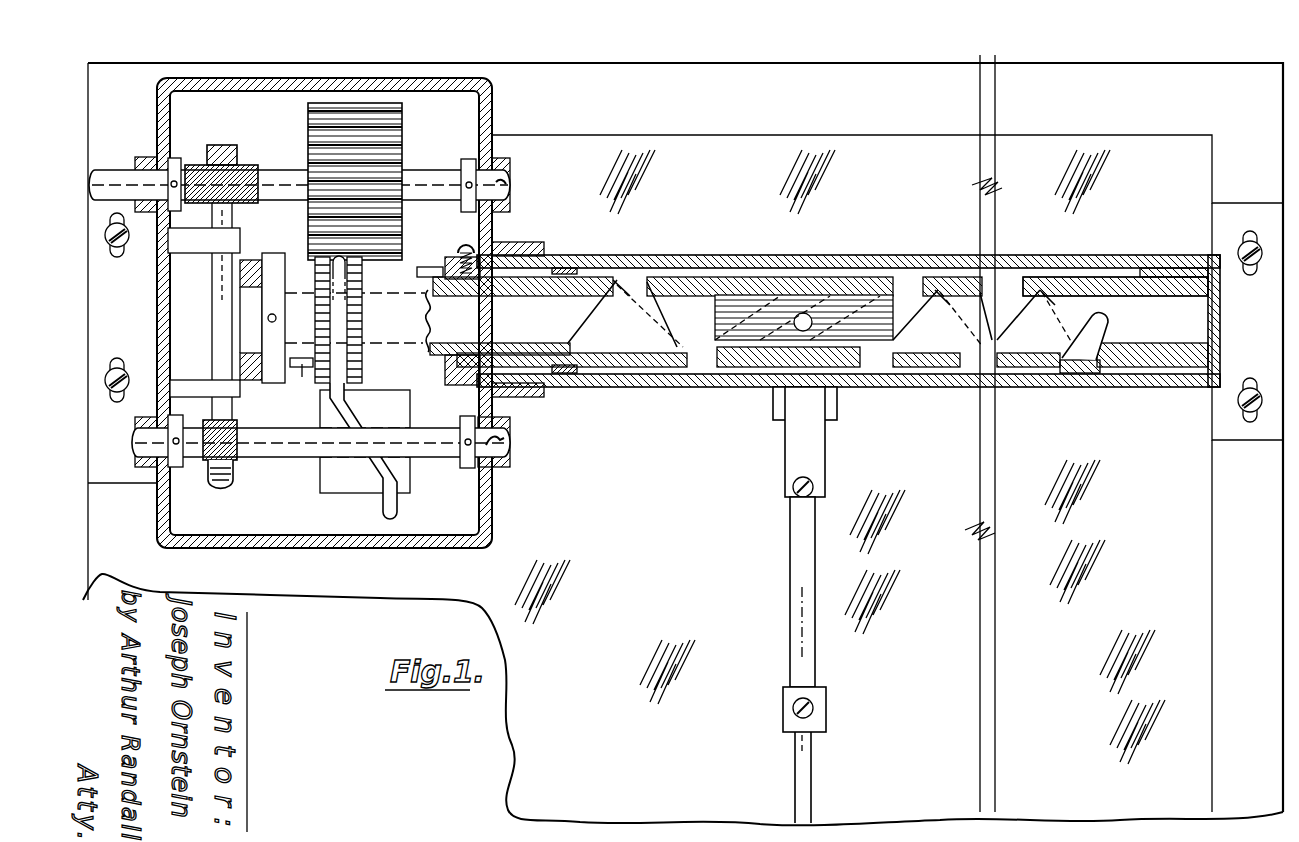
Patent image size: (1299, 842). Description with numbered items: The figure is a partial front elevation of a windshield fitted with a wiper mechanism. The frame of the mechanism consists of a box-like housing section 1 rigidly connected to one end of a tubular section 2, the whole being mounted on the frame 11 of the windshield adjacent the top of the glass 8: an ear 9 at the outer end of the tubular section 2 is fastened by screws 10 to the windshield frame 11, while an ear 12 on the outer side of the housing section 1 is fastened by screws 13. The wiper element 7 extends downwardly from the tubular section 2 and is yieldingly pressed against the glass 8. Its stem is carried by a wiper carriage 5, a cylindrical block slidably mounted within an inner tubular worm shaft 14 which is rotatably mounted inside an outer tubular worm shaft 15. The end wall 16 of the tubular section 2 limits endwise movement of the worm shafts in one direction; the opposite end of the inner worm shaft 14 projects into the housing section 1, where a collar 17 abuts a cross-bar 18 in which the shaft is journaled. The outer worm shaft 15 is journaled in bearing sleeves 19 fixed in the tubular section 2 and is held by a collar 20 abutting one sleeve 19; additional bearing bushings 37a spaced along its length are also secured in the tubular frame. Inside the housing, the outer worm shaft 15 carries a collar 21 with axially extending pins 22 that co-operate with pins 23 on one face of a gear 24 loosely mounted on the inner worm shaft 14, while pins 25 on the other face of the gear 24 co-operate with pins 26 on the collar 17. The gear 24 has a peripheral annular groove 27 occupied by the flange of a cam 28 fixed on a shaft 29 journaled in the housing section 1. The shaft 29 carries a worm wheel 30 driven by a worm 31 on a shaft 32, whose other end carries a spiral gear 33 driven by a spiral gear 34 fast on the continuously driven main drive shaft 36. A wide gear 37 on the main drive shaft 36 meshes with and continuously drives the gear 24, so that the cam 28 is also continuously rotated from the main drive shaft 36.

The box-like housing section 1 is at (494, 101).
The tubular section 2 is at (658, 257).
The wiper carriage 5 is at (857, 303).
The wiper element 7 is at (800, 576).
The glass 8 is at (887, 433).
The ear 9 is at (1247, 321).
The screws 10 is at (1245, 245).
The windshield frame 11 is at (1240, 528).
The ear 12 is at (122, 395).
The screws 13 is at (110, 250).
The inner tubular worm shaft 14 is at (410, 348).
The outer tubular worm shaft 15 is at (1080, 280).
The head or end wall 16 is at (1216, 307).
The collar 17 is at (262, 328).
The cross-bar 18 is at (248, 259).
The bearing sleeves 19 is at (549, 268).
The collar 20 is at (568, 378).
The collar 21 is at (458, 384).
The pins or studs 22 is at (428, 270).
The pins or studs 23 is at (394, 270).
The gear 24 is at (356, 378).
The pins or studs 25 is at (310, 367).
The pins or studs 26 is at (303, 368).
The annular groove 27 is at (340, 260).
The cam 28 is at (385, 508).
The shaft 29 is at (442, 443).
The worm wheel 30 is at (222, 486).
The worm 31 is at (203, 458).
The shaft 32 is at (217, 272).
The spiral gear 33 is at (253, 168).
The spiral gear 34 is at (223, 143).
The main drive shaft 36 is at (426, 172).
The wide gear 37 is at (393, 119).
The bearing bushings 37a is at (748, 385).